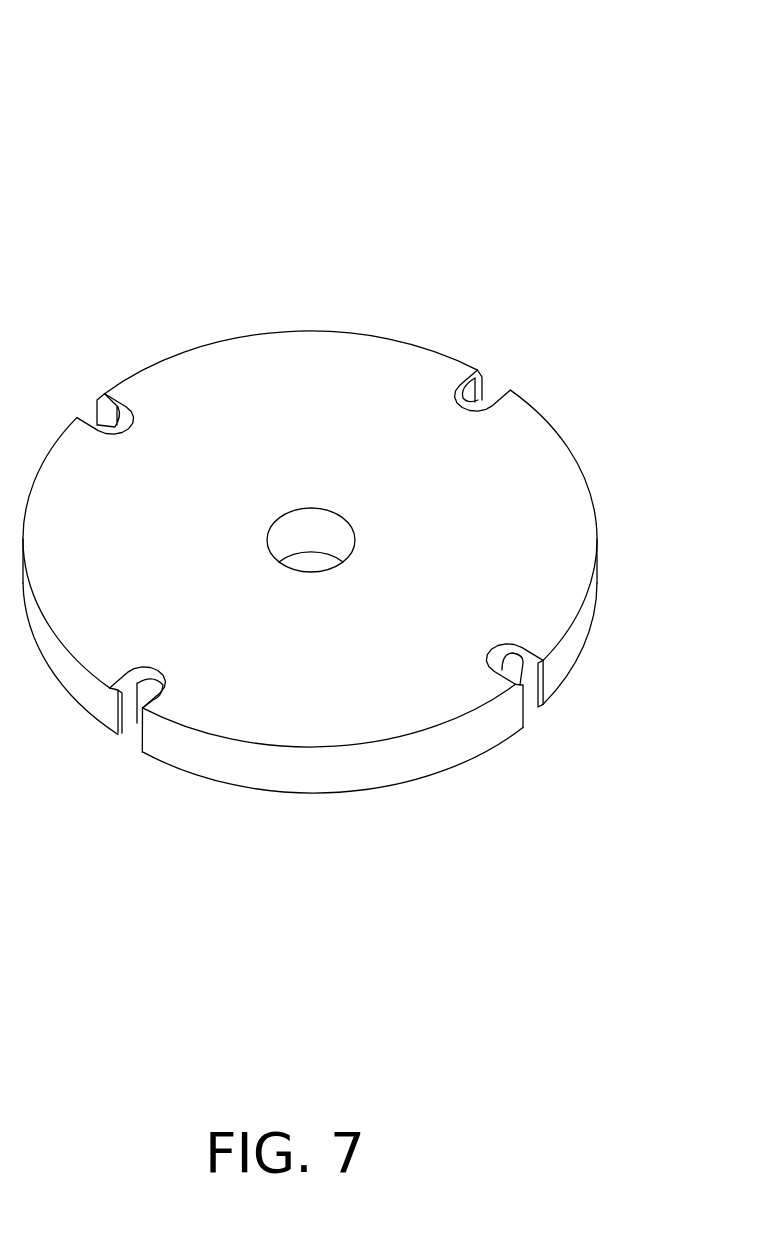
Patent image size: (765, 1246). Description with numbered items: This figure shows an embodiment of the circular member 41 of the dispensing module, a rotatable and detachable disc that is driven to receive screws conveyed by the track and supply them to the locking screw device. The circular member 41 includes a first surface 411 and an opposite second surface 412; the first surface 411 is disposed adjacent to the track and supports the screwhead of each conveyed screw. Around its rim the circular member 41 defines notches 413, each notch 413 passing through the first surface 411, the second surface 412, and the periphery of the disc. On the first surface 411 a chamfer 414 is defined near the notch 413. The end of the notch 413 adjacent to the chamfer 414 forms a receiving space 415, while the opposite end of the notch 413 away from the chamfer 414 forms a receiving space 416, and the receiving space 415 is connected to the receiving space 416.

The circular member 41 is at (290, 67).
The first surface 411 is at (525, 502).
The second surface 412 is at (362, 790).
The notch 413 is at (587, 812).
The chamfer 414 is at (537, 652).
The receiving space 415 is at (512, 668).
The receiving space 416 is at (535, 714).